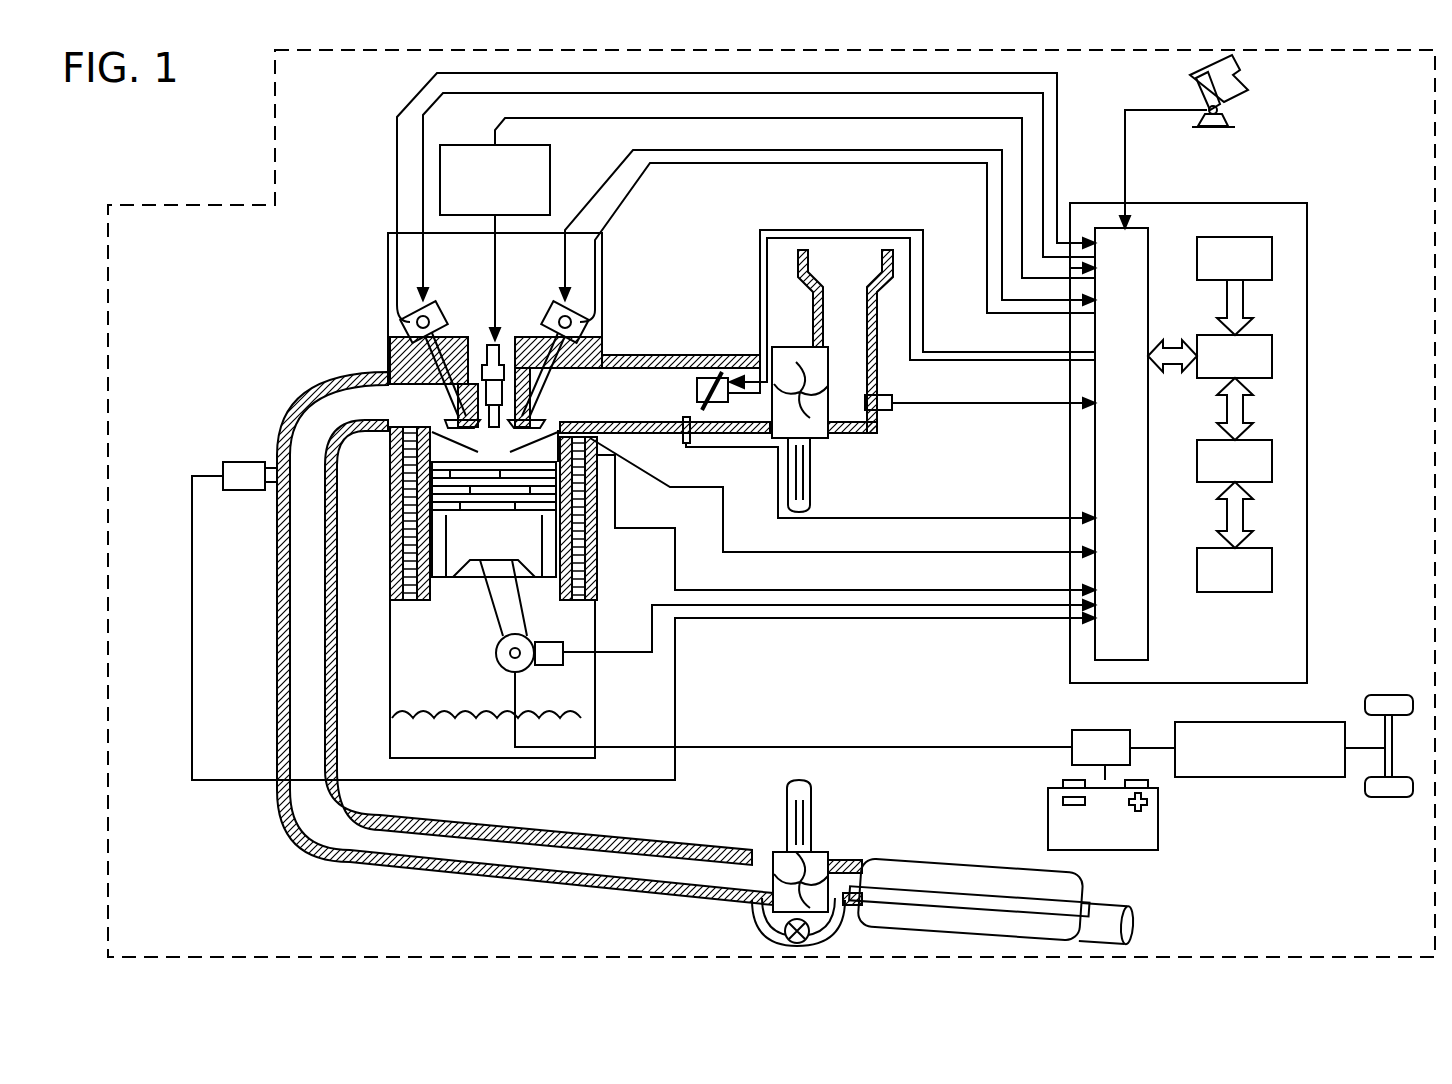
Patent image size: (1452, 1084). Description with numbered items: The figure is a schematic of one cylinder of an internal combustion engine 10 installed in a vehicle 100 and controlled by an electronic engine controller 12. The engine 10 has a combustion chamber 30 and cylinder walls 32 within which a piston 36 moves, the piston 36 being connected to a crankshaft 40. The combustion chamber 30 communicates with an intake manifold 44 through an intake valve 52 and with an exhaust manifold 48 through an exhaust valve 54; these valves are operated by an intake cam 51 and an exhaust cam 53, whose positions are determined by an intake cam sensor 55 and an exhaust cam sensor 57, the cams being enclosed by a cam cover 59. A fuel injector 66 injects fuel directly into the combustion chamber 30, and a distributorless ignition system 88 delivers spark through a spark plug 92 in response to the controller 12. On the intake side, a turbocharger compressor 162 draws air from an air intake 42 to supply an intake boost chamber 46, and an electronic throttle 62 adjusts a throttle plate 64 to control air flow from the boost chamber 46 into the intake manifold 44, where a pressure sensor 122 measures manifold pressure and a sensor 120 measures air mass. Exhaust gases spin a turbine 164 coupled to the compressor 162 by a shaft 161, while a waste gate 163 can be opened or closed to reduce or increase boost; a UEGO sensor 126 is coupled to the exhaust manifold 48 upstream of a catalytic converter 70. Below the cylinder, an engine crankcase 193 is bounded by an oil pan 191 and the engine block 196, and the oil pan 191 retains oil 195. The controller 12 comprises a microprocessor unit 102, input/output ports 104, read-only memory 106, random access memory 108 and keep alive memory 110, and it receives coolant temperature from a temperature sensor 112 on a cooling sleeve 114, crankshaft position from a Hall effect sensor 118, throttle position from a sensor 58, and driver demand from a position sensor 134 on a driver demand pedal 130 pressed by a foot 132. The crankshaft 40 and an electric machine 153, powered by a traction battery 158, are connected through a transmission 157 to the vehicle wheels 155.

The vehicle 100 is at (207, 198).
The internal combustion engine 10 is at (318, 290).
The electronic engine controller 12 is at (1298, 203).
The combustion chamber 30 is at (410, 532).
The cylinder walls 32 is at (435, 584).
The piston 36 is at (477, 548).
The crankshaft 40 is at (507, 672).
The air intake 42 is at (845, 341).
The intake manifold 44 is at (665, 394).
The intake boost chamber 46 is at (746, 410).
The exhaust manifold 48 is at (525, 638).
The intake cam 51 is at (553, 305).
The intake valve 52 is at (538, 414).
The exhaust cam 53 is at (431, 306).
The exhaust valve 54 is at (390, 372).
The intake cam sensor 55 is at (590, 330).
The exhaust cam sensor 57 is at (402, 326).
The throttle position sensor 58 is at (727, 370).
The cam cover 59 is at (603, 252).
The electronic throttle 62 is at (696, 378).
The throttle plate 64 is at (715, 353).
The fuel injector 66 is at (603, 450).
The catalytic converter 70 is at (1003, 862).
The distributorless ignition system 88 is at (458, 146).
The spark plug 92 is at (505, 350).
The microprocessor unit 102 is at (1272, 352).
The input/output ports 104 is at (1152, 237).
The read-only memory 106 is at (1272, 250).
The random access memory 108 is at (1272, 456).
The keep alive memory 110 is at (1272, 562).
The temperature sensor 112 is at (605, 470).
The cooling sleeve 114 is at (586, 560).
The Hall effect sensor 118 is at (550, 642).
The air mass sensor 120 is at (893, 400).
The pressure sensor 122 is at (687, 414).
The Universal Exhaust Gas Oxygen (UEGO) sensor 126 is at (222, 463).
The driver demand pedal 130 is at (1190, 86).
The foot 132 is at (1243, 73).
The position sensor 134 is at (1222, 108).
The electric machine 153 is at (1110, 729).
The vehicle wheels 155 is at (1375, 695).
The transmission 157 is at (1282, 777).
The traction battery 158 is at (1119, 900).
The shaft 161 is at (811, 842).
The turbocharger compressor 162 is at (800, 346).
The turbocharger waste gate 163 is at (783, 950).
The turbine 164 is at (773, 852).
The oil pan 191 is at (594, 716).
The engine crankcase 193 is at (582, 684).
The oil 195 is at (486, 732).
The engine block 196 is at (392, 445).